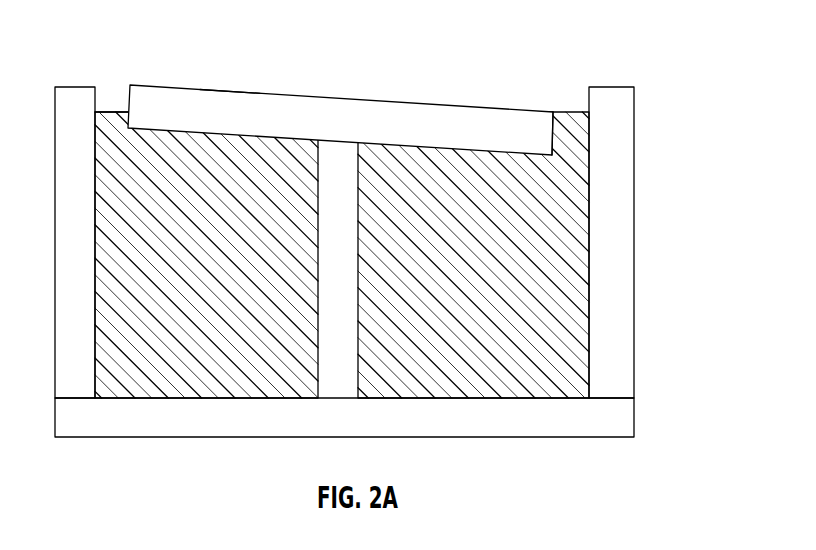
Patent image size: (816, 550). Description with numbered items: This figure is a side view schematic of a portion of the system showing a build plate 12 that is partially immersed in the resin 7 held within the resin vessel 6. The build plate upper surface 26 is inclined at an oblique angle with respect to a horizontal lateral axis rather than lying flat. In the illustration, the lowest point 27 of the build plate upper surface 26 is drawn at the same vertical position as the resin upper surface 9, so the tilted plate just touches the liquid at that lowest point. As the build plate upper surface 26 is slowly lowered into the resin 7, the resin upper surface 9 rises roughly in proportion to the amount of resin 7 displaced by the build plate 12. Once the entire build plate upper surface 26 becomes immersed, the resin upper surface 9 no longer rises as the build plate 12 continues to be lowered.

The resin vessel 6 is at (635, 330).
The resin 7 is at (560, 278).
The resin upper surface 9 is at (112, 111).
The build plate 12 is at (554, 132).
The build plate upper surface 26 is at (227, 91).
The lowest point of the build plate upper surface 27 is at (553, 111).